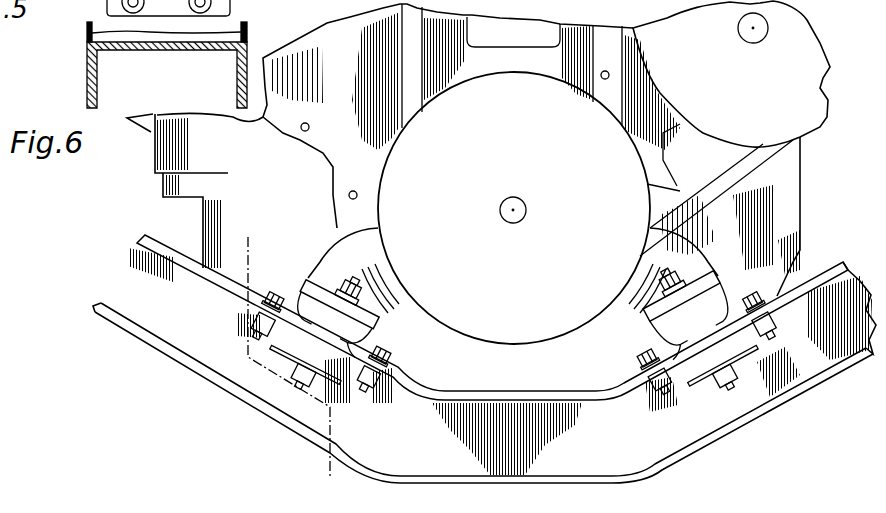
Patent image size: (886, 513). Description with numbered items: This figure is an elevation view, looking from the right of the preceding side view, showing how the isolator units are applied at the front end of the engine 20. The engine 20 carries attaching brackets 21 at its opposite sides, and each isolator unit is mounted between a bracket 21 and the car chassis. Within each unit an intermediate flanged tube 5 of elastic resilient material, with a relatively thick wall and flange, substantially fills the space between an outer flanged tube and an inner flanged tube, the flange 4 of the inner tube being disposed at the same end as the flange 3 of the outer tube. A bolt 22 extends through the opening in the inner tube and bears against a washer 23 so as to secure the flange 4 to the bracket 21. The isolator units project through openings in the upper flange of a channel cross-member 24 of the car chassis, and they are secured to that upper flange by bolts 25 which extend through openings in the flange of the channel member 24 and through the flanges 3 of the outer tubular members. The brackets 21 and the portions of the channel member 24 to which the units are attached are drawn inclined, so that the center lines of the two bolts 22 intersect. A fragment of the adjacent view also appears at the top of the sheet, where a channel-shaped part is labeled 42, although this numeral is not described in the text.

The flange 3 is at (776, 294).
The flange 4 is at (701, 298).
The intermediate flanged tube 5 is at (248, 258).
The engine 20 is at (783, 174).
The attaching bracket 21 is at (393, 304).
The bolt 22 is at (726, 392).
The washer 23 is at (757, 356).
The channel cross-member 24 is at (823, 266).
The bolt 25 is at (773, 333).
The channel member 42 is at (87, 70).